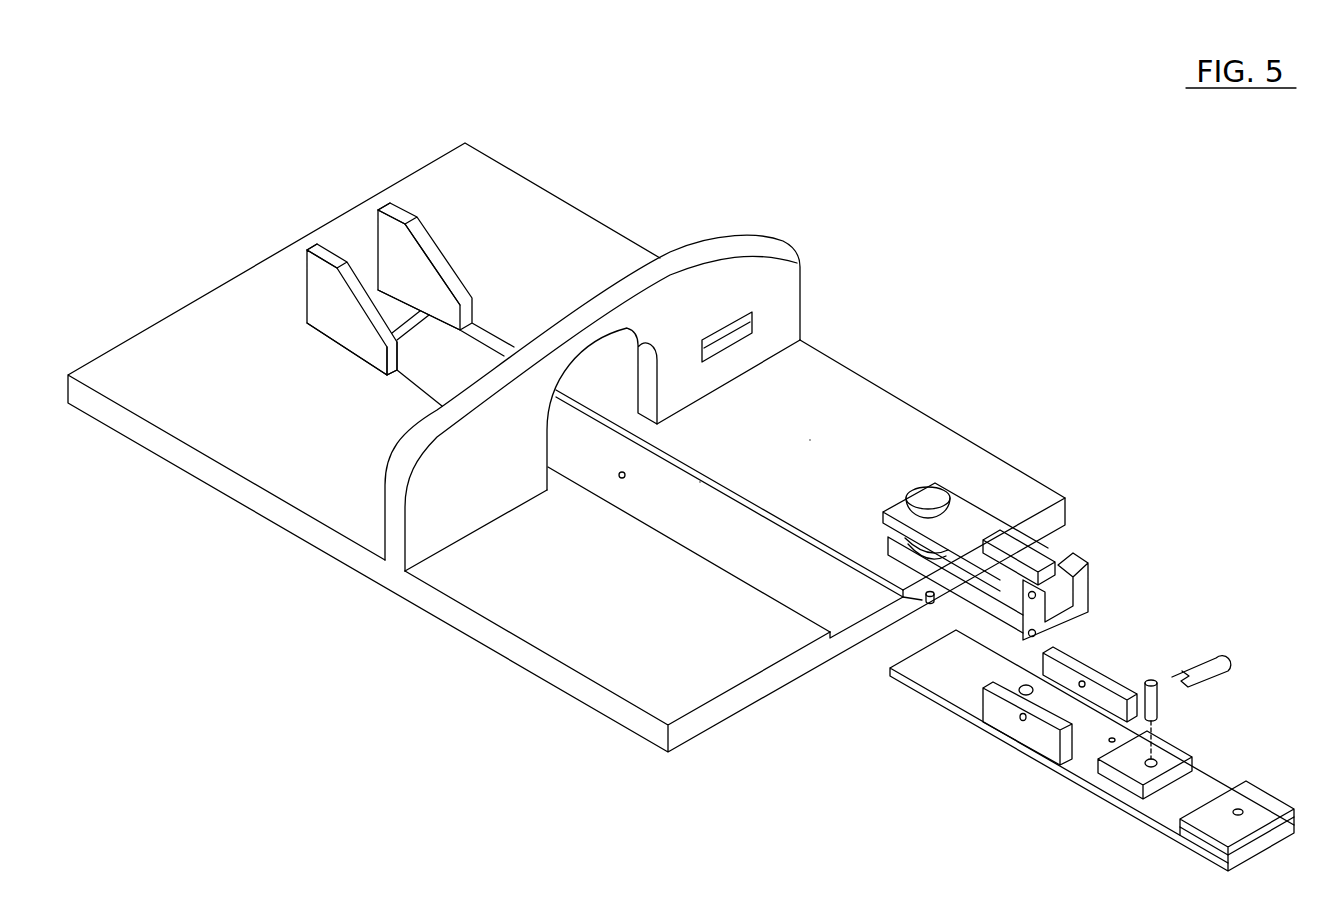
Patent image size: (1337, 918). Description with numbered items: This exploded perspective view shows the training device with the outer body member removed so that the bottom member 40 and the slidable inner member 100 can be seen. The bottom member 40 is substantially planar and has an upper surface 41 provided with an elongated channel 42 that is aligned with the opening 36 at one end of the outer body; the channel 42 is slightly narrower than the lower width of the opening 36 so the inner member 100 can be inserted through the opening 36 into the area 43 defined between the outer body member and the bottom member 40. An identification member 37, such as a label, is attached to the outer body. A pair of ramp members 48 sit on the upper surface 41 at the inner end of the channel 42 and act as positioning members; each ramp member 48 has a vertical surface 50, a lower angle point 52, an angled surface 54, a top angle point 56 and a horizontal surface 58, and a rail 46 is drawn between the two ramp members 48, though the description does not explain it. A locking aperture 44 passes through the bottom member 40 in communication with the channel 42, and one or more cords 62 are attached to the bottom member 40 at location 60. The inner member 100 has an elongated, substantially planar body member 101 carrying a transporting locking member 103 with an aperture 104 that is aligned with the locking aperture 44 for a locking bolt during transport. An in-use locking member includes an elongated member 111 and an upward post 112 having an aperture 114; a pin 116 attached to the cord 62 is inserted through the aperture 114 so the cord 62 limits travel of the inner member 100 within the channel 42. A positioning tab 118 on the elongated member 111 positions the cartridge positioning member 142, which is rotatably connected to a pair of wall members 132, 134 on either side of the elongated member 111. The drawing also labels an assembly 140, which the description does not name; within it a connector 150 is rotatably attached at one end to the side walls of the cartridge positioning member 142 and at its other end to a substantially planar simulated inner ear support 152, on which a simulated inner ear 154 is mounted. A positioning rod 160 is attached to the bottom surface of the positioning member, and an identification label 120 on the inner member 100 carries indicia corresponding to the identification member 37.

The opening 36 is at (647, 383).
The identification member 37 is at (757, 316).
The bottom member 40 is at (605, 447).
The upper surface 41 is at (917, 420).
The elongated channel 42 is at (832, 640).
The area 43 is at (581, 403).
The locking aperture 44 is at (618, 476).
The rail 46 is at (405, 322).
The ramp member 48 is at (379, 290).
The vertical surface 50 is at (388, 378).
The lower angle point 52 is at (470, 303).
The angled surface 54 is at (447, 270).
The top angle point 56 is at (412, 220).
The horizontal surface 58 is at (392, 210).
The location 60 is at (778, 405).
The cord 62 is at (810, 440).
The inner member 100 is at (1095, 757).
The elongated body member 101 is at (1162, 818).
The transporting locking member 103 is at (1238, 832).
The aperture 104 is at (1241, 810).
The elongated member 111 is at (1082, 762).
The post 112 is at (1152, 680).
The aperture 114 is at (1159, 698).
The pin 116 is at (1216, 653).
The positioning tab 118 is at (1020, 684).
The identification label 120 is at (1112, 765).
The wall member 132 is at (1012, 730).
The wall member 134 is at (1103, 685).
The clamp assembly 140 is at (1011, 522).
The cartridge positioning member 142 is at (975, 600).
The connector 150 is at (1030, 553).
The simulated inner ear support 152 is at (965, 495).
The simulated inner ear 154 is at (941, 494).
The positioning rod 160 is at (907, 603).